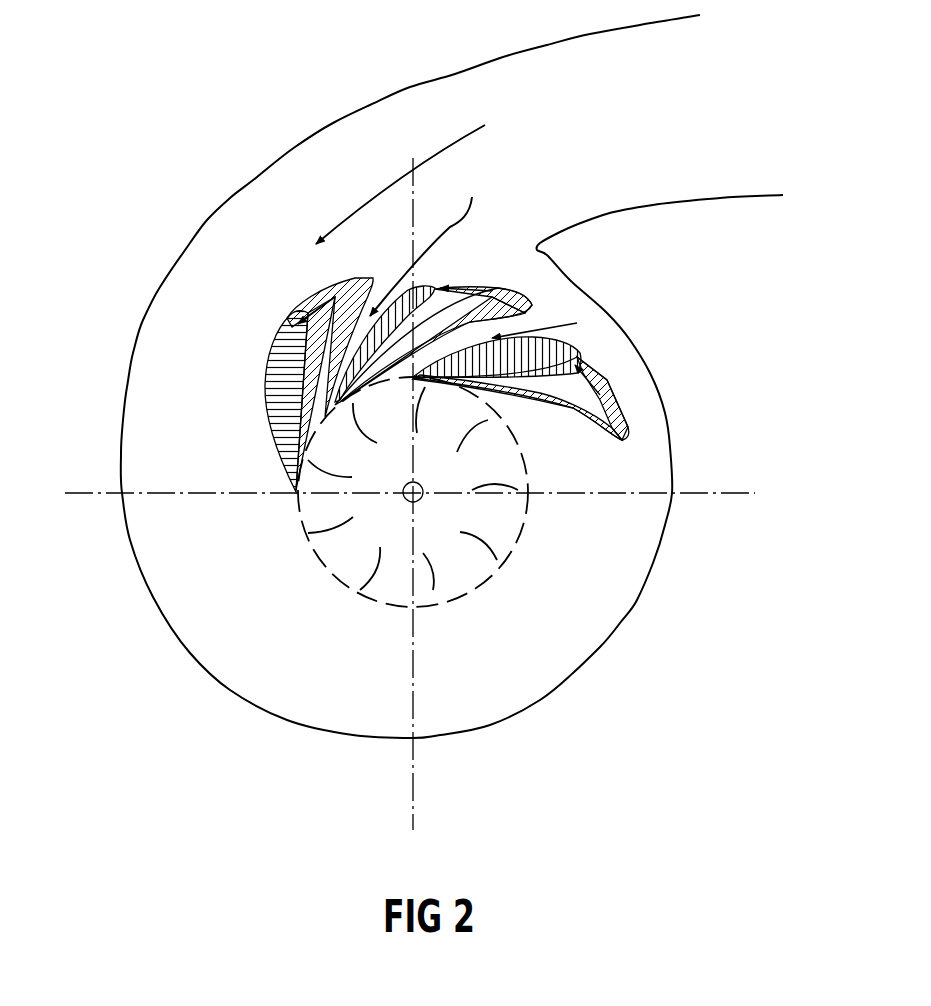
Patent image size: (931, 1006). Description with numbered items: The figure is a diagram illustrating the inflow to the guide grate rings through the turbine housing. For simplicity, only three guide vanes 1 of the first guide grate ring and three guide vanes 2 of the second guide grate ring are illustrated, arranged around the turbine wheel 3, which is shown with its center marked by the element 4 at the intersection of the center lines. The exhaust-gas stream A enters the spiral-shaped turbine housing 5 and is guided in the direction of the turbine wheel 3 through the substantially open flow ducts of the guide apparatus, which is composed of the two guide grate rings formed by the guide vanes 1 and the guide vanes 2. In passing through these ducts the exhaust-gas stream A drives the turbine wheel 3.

The guide vane of the first guide grate ring 1 is at (267, 370).
The guide vane of the second guide grate ring 2 is at (313, 290).
The turbine wheel 3 is at (398, 425).
The hub / axis 4 is at (415, 488).
The spiral-shaped turbine housing 5 is at (330, 118).
The exhaust-gas stream A is at (440, 150).